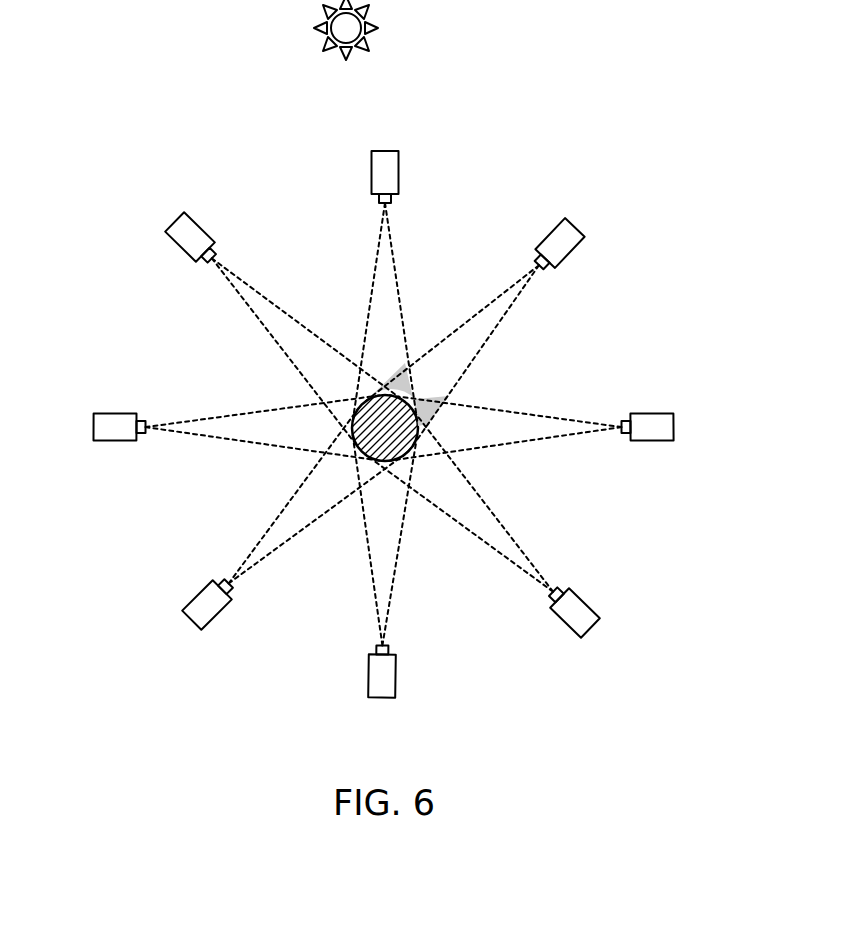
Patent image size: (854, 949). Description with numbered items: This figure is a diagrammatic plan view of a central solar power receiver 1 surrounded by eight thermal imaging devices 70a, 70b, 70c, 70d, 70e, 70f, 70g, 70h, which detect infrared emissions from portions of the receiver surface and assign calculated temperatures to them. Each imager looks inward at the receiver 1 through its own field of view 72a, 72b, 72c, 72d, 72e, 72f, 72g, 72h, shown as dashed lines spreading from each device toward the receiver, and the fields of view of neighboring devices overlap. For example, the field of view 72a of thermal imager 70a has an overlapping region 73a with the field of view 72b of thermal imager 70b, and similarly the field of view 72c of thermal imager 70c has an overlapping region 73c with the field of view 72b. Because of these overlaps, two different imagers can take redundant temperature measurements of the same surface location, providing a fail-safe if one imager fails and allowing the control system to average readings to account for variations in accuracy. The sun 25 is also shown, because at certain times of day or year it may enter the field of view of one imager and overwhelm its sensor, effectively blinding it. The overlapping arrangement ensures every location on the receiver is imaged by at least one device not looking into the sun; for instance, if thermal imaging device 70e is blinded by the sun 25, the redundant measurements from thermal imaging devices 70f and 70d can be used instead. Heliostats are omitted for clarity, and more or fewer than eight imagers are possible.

The receiver 1 is at (392, 442).
The sun 25 is at (345, 30).
The thermal imager 70a is at (385, 172).
The thermal imager 70b is at (562, 243).
The thermal imager 70c is at (660, 423).
The thermal imaging device 70d is at (577, 613).
The thermal imaging device 70e is at (387, 683).
The thermal imaging device 70f is at (200, 612).
The thermal imaging device 70g is at (117, 427).
The thermal imaging device 70h is at (192, 237).
The field of view 72a is at (368, 300).
The field of view 72b is at (512, 304).
The field of view 72c is at (532, 442).
The field of view 72d is at (468, 531).
The field of view 72e is at (366, 547).
The field of view 72f is at (238, 565).
The field of view 72g is at (162, 410).
The field of view 72h is at (275, 303).
The overlapping region 73a is at (407, 375).
The overlapping region 73c is at (415, 398).